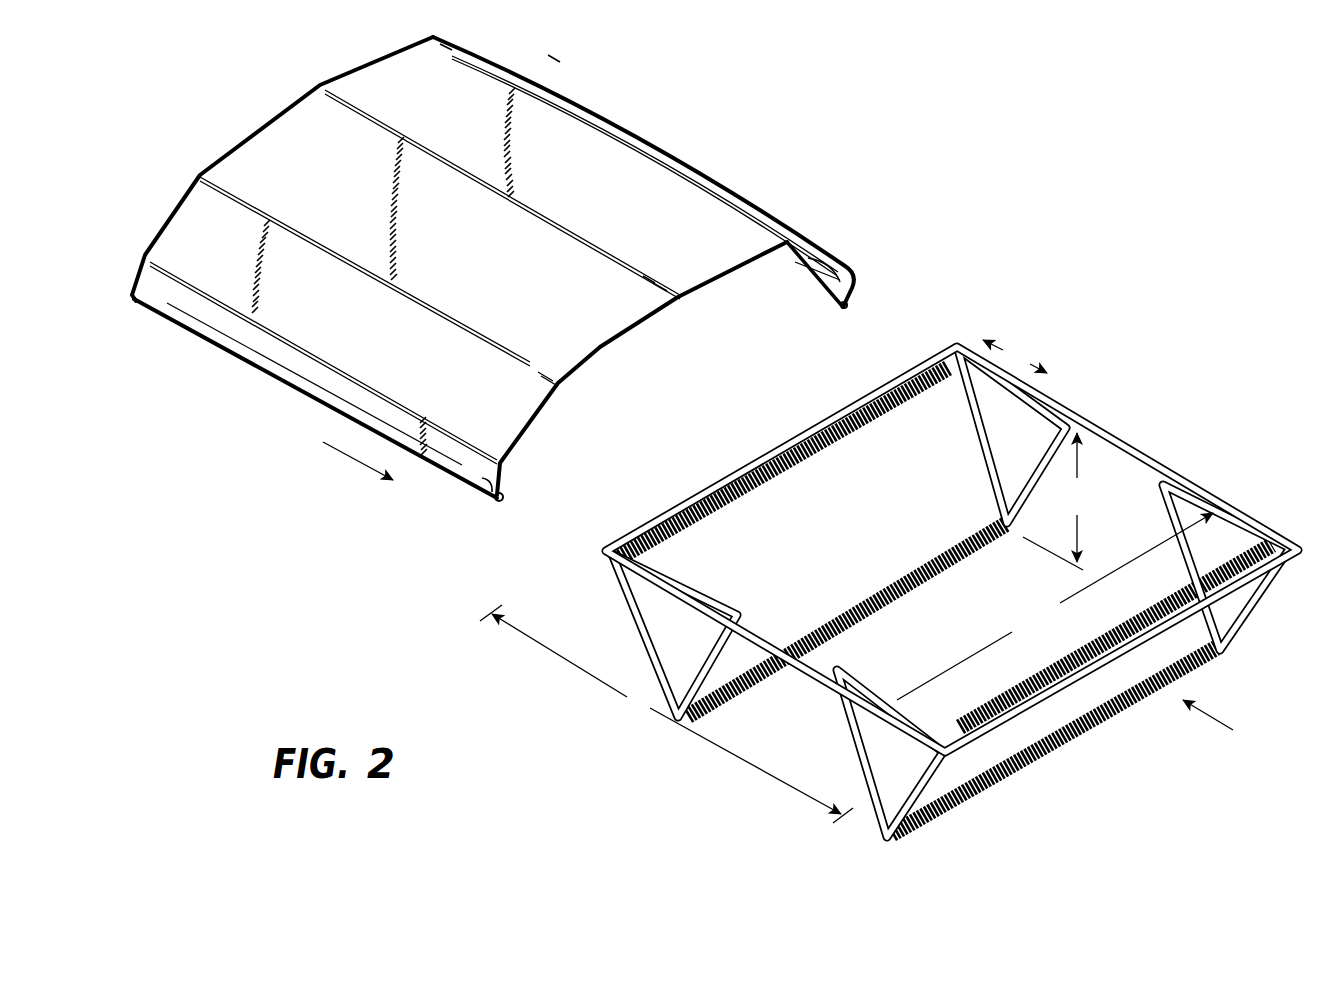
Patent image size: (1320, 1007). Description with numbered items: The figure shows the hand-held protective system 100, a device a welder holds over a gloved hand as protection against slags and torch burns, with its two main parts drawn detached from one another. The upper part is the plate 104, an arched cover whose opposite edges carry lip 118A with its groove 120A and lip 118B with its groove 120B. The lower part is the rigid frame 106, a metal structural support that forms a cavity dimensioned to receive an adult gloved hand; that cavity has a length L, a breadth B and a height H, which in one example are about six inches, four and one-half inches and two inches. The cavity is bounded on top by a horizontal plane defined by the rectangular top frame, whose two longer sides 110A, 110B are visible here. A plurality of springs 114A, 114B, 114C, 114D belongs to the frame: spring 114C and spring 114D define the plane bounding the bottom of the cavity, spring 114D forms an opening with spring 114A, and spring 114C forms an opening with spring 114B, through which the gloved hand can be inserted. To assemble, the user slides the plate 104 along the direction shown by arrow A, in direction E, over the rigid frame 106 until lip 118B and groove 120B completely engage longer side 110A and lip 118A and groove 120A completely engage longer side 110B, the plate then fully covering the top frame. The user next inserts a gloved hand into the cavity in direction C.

The hand-held protective system 100 is at (1030, 175).
The plate 104 is at (640, 144).
The rigid frame 106 is at (1158, 448).
The longer side 110A is at (1087, 412).
The longer side 110B is at (818, 694).
The spring 114A is at (1263, 533).
The spring 114B is at (848, 450).
The spring 114C is at (763, 680).
The spring 114D is at (977, 795).
The lip 118A is at (497, 507).
The lip 118B is at (860, 297).
The groove 120A is at (482, 478).
The groove 120B is at (816, 255).
The arrow A is at (1015, 356).
The breadth B is at (1055, 606).
The direction C is at (1220, 727).
The direction E is at (346, 451).
The height H is at (1054, 501).
The length L is at (666, 714).